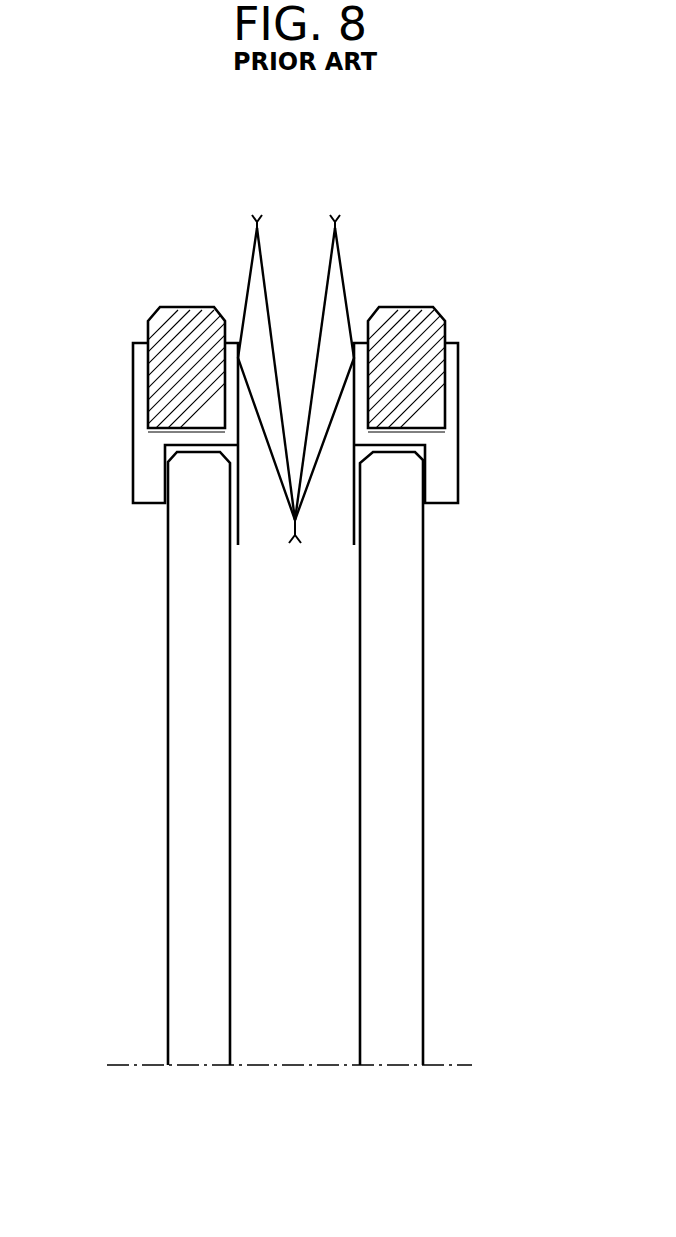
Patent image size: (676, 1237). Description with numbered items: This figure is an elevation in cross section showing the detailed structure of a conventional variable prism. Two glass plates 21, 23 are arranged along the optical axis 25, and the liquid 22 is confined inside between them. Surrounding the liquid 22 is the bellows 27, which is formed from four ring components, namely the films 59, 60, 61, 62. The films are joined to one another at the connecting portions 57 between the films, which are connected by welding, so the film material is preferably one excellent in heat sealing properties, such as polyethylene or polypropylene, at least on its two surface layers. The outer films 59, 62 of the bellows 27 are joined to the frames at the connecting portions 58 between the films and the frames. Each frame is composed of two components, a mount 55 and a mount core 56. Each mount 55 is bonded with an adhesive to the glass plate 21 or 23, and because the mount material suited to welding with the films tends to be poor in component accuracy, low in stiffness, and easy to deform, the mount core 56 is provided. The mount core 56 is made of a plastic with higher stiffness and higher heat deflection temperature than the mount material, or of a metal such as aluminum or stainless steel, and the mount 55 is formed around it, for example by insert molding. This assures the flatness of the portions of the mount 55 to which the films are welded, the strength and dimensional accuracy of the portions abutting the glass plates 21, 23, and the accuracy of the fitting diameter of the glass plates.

The bellows 27 is at (403, 162).
The connecting portions between the films 57 is at (257, 234).
The film 59 is at (253, 274).
The film 60 is at (250, 290).
The film 61 is at (336, 300).
The film 62 is at (340, 272).
The mount core 56 is at (148, 325).
The connecting portions between the films and the frames 58 is at (215, 436).
The mount 55 is at (137, 493).
The glass plate 21 is at (177, 778).
The liquid 22 is at (348, 692).
The glass plate 23 is at (413, 805).
The optical axis 25 is at (455, 1064).